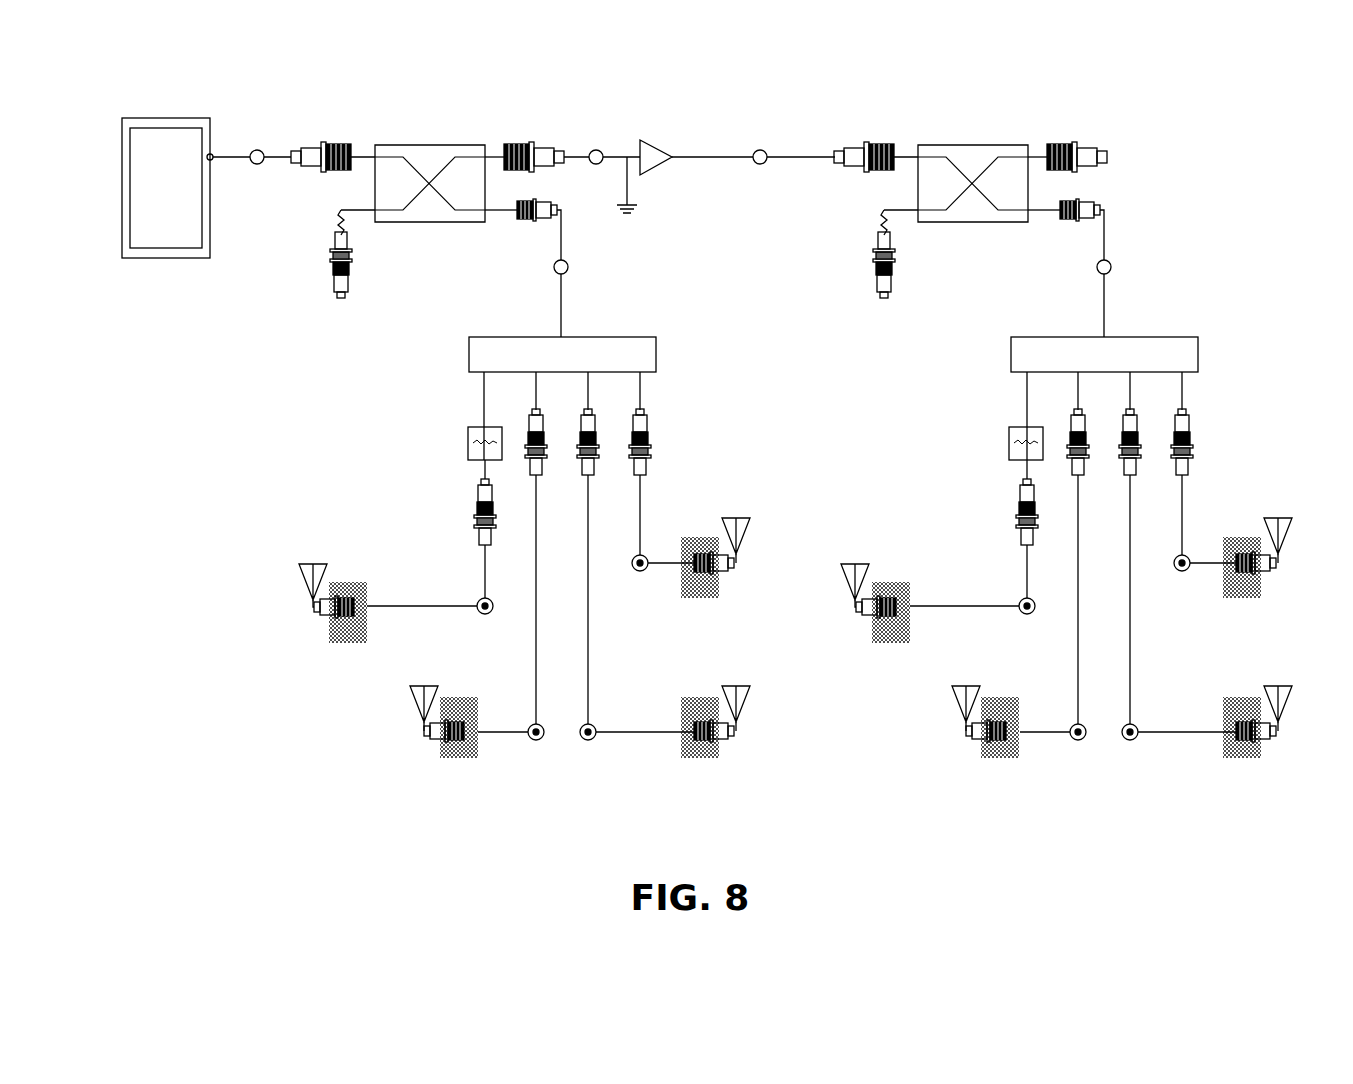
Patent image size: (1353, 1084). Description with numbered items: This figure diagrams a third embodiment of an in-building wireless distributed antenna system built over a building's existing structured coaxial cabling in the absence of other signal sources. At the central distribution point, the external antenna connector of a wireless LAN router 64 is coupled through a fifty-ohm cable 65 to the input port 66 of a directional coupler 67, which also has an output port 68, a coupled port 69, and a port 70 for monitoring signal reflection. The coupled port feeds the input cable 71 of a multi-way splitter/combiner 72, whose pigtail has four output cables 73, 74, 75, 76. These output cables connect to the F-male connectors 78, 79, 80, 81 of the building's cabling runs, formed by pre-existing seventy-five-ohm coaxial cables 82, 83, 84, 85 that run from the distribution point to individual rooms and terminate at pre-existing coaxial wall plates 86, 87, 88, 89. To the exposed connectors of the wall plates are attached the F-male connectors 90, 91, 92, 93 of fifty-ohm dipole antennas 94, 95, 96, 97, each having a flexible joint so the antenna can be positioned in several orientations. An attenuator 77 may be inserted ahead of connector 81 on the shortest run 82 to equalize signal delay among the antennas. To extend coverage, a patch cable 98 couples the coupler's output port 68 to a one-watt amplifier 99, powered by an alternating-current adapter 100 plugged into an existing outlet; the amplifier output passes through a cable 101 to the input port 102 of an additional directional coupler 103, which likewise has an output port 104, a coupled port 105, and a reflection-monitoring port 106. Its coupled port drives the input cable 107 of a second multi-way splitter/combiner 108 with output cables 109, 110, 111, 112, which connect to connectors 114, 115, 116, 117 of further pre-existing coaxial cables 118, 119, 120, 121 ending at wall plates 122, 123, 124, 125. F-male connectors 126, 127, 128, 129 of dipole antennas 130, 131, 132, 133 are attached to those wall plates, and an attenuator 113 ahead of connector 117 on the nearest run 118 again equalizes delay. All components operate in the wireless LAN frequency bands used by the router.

The wireless LAN router 64 is at (116, 180).
The 50-ohm cable 65 is at (258, 135).
The F-female input port 66 is at (326, 138).
The directional coupler 67 is at (437, 138).
The F-female output port 68 is at (530, 135).
The F-male coupling port 69 is at (520, 227).
The F-female port for monitoring signal reflection 70 is at (318, 268).
The input cable 71 is at (570, 268).
The multi-way splitter/combiner 72 is at (460, 345).
The output cable 73 is at (490, 388).
The output cable 74 is at (542, 388).
The output cable 75 is at (594, 388).
The output cable 76 is at (646, 388).
The attenuator 77 is at (468, 440).
The F-male connector 78 is at (549, 442).
The F-male connector 79 is at (601, 442).
The F-male connector 80 is at (658, 442).
The F-male connector 81 is at (470, 525).
The RG-6 cable 82 is at (464, 595).
The RG-6 cable 83 is at (529, 592).
The RG-6 cable 84 is at (596, 710).
The RG-6 cable 85 is at (631, 572).
The coaxial wall plate 86 is at (358, 577).
The coaxial wall plate 87 is at (470, 692).
The coaxial wall plate 88 is at (685, 692).
The coaxial wall plate 89 is at (697, 530).
The F-male connector 90 is at (316, 618).
The F-male connector 91 is at (432, 741).
The F-male connector 92 is at (735, 743).
The F-male connector 93 is at (737, 577).
The dipole antenna 94 is at (299, 562).
The dipole antenna 95 is at (412, 680).
The dipole antenna 96 is at (760, 680).
The dipole antenna 97 is at (757, 513).
The F-male-to-SMA-male patch cable 98 is at (592, 145).
The 1-watt amplifier 99 is at (645, 135).
The alternating-current adapter 100 is at (647, 212).
The RP-SMA-male-to-F-male cable 101 is at (763, 143).
The F-female input port 102 is at (862, 138).
The additional directional coupler 103 is at (973, 138).
The F-female output port 104 is at (1074, 138).
The F-male coupled port 105 is at (1073, 228).
The F-female port for monitoring signal reflection 106 is at (868, 270).
The input cable 107 is at (1113, 268).
The multi-way splitter/combiner 108 is at (1003, 347).
The output cable 109 is at (1033, 388).
The output cable 110 is at (1086, 388).
The output cable 111 is at (1138, 388).
The output cable 112 is at (1190, 388).
The attenuator 113 is at (1004, 448).
The F-male connector 114 is at (1091, 450).
The F-male connector 115 is at (1146, 450).
The F-male connector 116 is at (1202, 455).
The F-male connector 117 is at (1012, 525).
The RG-6 cable 118 is at (1006, 595).
The RG-6 cable 119 is at (1070, 592).
The RG-6 cable 120 is at (1138, 710).
The RG-6 cable 121 is at (1173, 572).
The coaxial wall plate 122 is at (898, 577).
The coaxial wall plate 123 is at (1010, 692).
The coaxial wall plate 124 is at (1232, 690).
The coaxial wall plate 125 is at (1237, 530).
The F-male connector 126 is at (860, 618).
The F-male connector 127 is at (967, 741).
The F-male connector 128 is at (1277, 743).
The F-male connector 129 is at (1277, 577).
The dipole antenna 130 is at (848, 562).
The dipole antenna 131 is at (953, 680).
The dipole antenna 132 is at (1298, 680).
The dipole antenna 133 is at (1295, 513).